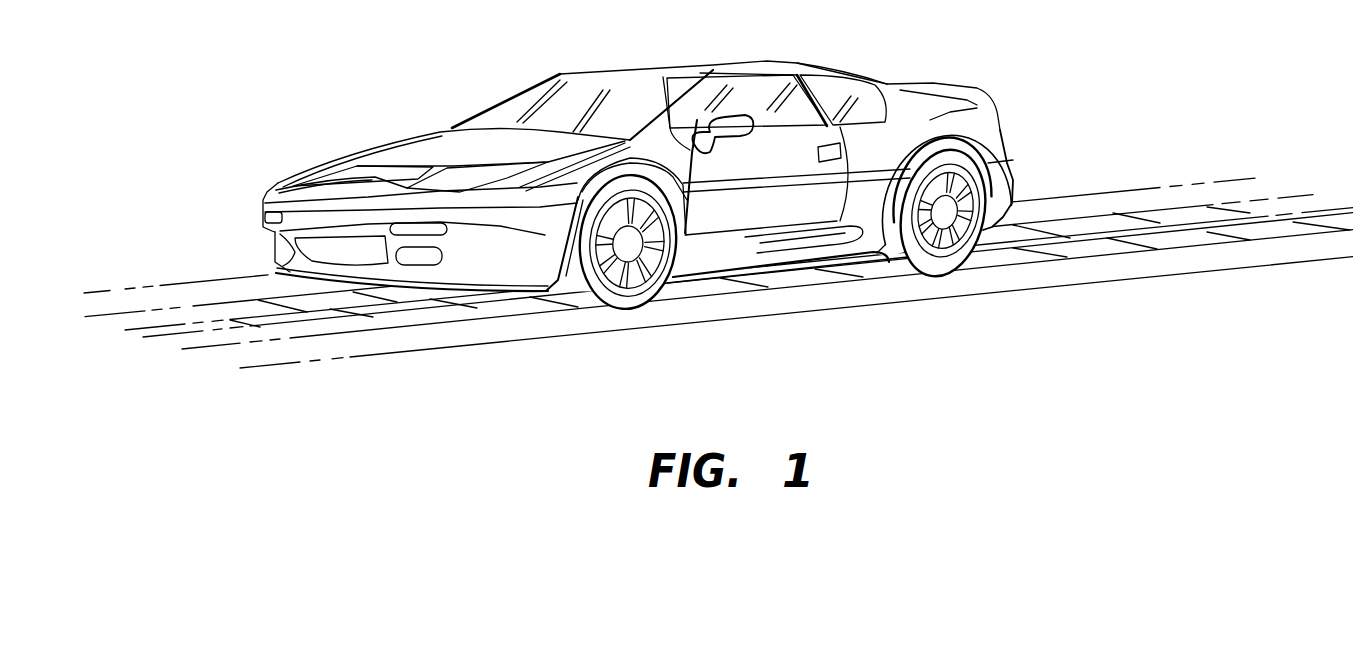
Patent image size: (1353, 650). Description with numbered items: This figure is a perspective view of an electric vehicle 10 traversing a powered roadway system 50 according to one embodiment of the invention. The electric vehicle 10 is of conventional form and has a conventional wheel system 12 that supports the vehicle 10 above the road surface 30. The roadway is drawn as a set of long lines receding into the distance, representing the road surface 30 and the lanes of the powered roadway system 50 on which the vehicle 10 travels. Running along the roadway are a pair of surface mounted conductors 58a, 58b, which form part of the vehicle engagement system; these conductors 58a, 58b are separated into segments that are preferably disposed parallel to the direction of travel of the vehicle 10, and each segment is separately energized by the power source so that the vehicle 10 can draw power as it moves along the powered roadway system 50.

The electric vehicle 10 is at (642, 198).
The wheel system 12 is at (940, 278).
The road surface 30 is at (377, 348).
The powered roadway system 50 is at (424, 326).
The surface mounted conductor 58a is at (1133, 254).
The surface mounted conductor 58b is at (1132, 212).